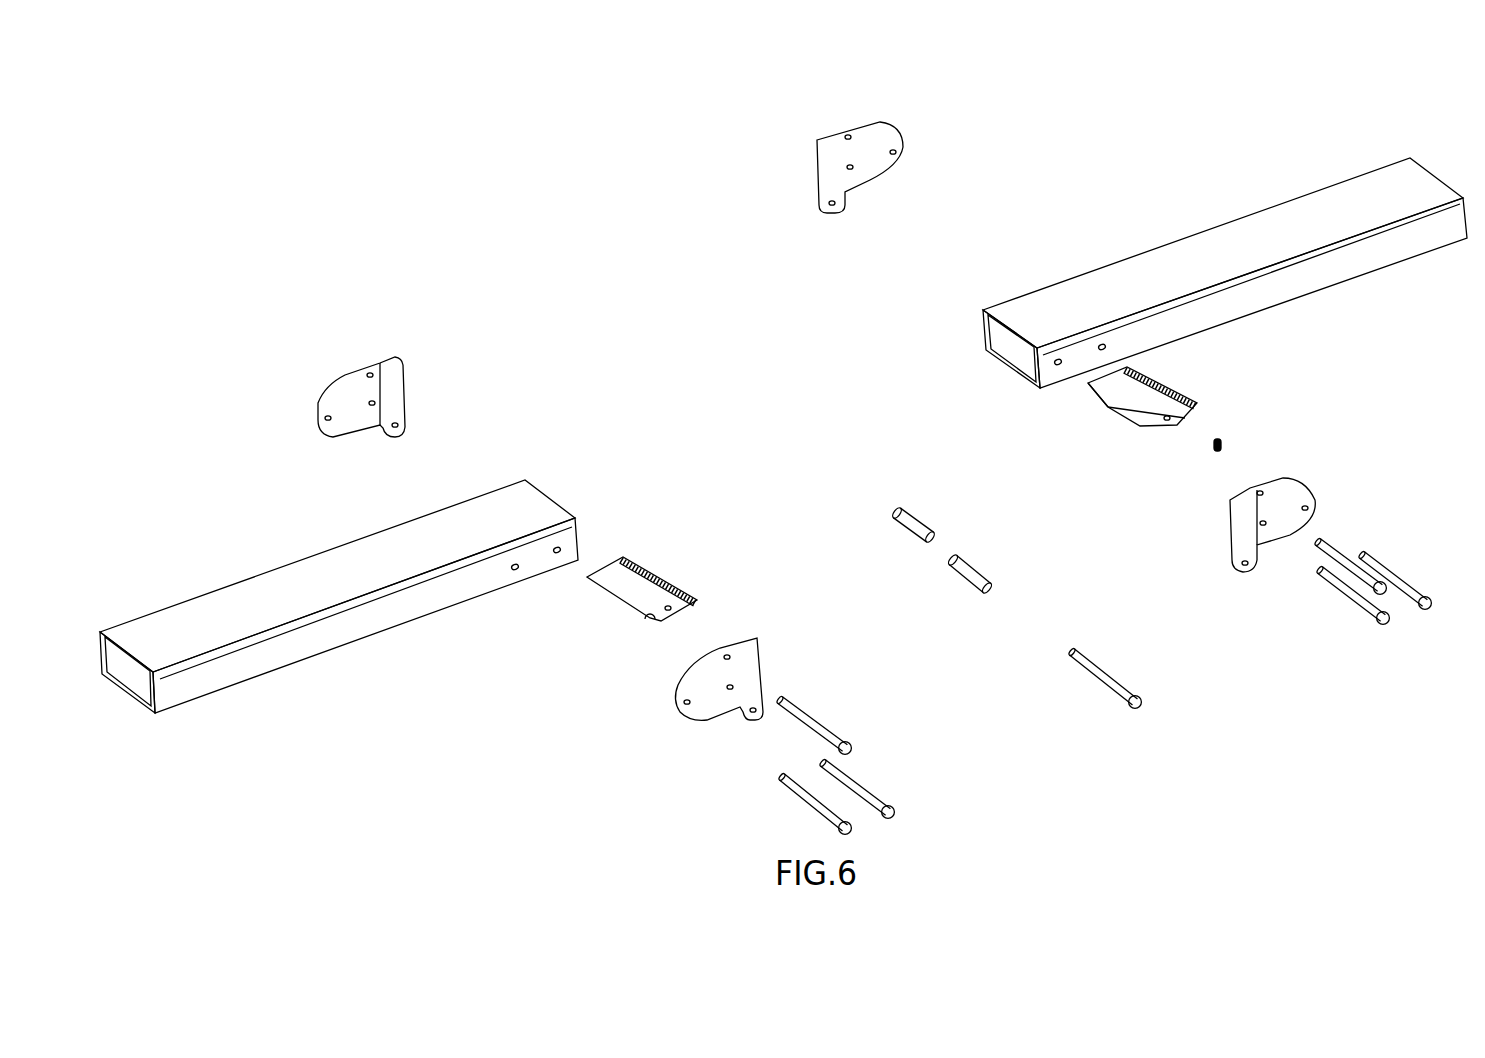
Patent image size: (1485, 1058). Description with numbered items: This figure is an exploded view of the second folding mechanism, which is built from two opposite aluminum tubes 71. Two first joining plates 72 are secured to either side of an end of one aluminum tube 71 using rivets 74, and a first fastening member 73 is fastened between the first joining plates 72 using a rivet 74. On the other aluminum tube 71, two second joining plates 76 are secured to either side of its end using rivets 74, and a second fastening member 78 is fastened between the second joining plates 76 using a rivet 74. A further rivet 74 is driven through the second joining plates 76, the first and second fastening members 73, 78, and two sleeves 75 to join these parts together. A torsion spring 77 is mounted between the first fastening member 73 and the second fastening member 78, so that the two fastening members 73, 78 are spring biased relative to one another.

The aluminum tube 71 is at (783, 430).
The first joining plate 72 is at (354, 354).
The first fastening member 73 is at (591, 632).
The rivet 74 is at (857, 785).
The sleeve 75 is at (903, 525).
The second joining plate 76 is at (825, 139).
The torsion spring 77 is at (1348, 413).
The second fastening member 78 is at (1236, 385).